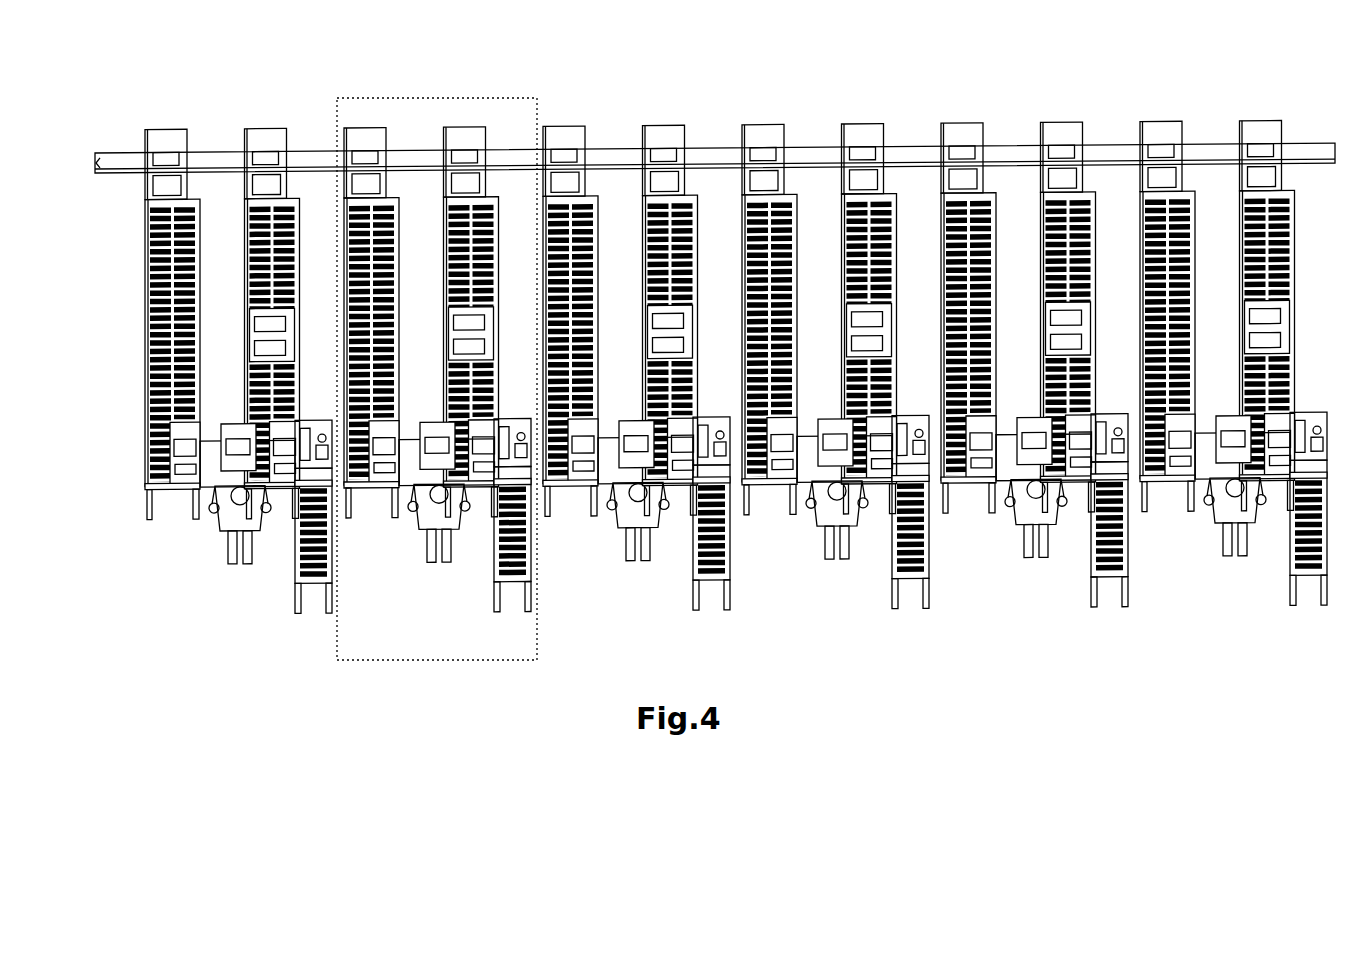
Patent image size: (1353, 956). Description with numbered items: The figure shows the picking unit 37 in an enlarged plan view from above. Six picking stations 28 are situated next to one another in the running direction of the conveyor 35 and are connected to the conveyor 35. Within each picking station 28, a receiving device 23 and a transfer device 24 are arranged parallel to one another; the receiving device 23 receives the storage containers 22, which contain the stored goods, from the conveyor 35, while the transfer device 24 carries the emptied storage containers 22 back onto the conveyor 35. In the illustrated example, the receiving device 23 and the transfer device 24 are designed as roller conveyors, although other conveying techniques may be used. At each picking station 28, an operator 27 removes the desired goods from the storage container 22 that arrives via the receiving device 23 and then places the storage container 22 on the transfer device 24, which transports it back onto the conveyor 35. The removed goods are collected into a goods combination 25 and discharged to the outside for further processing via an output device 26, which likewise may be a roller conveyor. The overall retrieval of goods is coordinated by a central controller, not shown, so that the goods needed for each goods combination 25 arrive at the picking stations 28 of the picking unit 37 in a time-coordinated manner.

The storage container 22 is at (490, 290).
The receiving device 23 is at (365, 140).
The transfer device 24 is at (467, 142).
The goods combination 25 is at (543, 473).
The output device 26 is at (537, 590).
The operator 27 is at (415, 597).
The picking station 28 is at (428, 98).
The conveyor 35 is at (902, 155).
The picking unit 37 is at (192, 580).